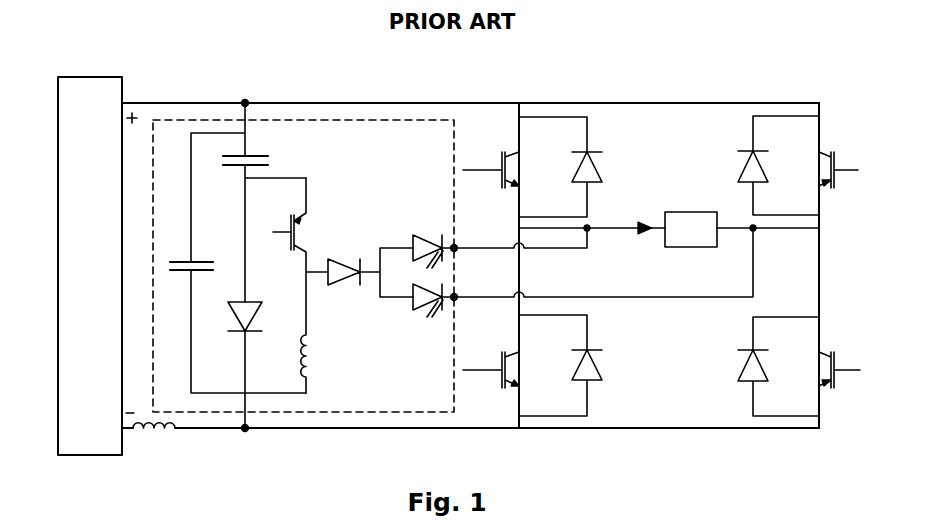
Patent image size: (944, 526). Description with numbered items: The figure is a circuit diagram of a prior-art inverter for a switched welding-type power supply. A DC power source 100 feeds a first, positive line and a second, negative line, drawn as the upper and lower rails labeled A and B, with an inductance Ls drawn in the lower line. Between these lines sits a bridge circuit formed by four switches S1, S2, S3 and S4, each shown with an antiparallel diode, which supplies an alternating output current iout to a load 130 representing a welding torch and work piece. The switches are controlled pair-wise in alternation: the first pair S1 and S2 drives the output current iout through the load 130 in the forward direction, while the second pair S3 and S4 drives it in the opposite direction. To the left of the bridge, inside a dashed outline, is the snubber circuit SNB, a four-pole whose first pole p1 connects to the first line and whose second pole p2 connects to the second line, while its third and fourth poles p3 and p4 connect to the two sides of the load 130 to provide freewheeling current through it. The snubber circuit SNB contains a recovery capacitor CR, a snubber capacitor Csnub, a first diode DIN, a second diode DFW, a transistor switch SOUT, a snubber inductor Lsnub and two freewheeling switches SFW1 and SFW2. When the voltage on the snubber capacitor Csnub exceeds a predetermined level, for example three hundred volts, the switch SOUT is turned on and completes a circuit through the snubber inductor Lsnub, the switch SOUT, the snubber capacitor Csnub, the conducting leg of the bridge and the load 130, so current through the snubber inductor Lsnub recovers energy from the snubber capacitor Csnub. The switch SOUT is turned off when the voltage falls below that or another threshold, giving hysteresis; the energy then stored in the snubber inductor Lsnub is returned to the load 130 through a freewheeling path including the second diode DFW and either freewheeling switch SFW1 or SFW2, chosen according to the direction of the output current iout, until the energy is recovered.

The DC power source 100 is at (107, 77).
The snubber circuit SNB is at (388, 119).
The first pole p1 is at (243, 100).
The second pole p2 is at (245, 431).
The third pole p3 is at (453, 245).
The fourth pole p4 is at (453, 300).
The snubber capacitor Csnub is at (270, 161).
The recovery capacitor CR is at (195, 251).
The first diode DIN is at (234, 329).
The transistor switch SOUT is at (312, 225).
The second diode DFW is at (343, 288).
The snubber inductor Lsnub is at (332, 332).
The first freewheeling switch SFW1 is at (419, 238).
The second freewheeling switch SFW2 is at (417, 311).
The source inductor Ls is at (154, 445).
The switch S1 is at (532, 167).
The switch S2 is at (799, 366).
The switch S3 is at (798, 165).
The switch S4 is at (532, 365).
The load 130 is at (690, 212).
The output current iout is at (632, 240).
The upper DC rail A is at (680, 103).
The lower DC rail B is at (677, 429).